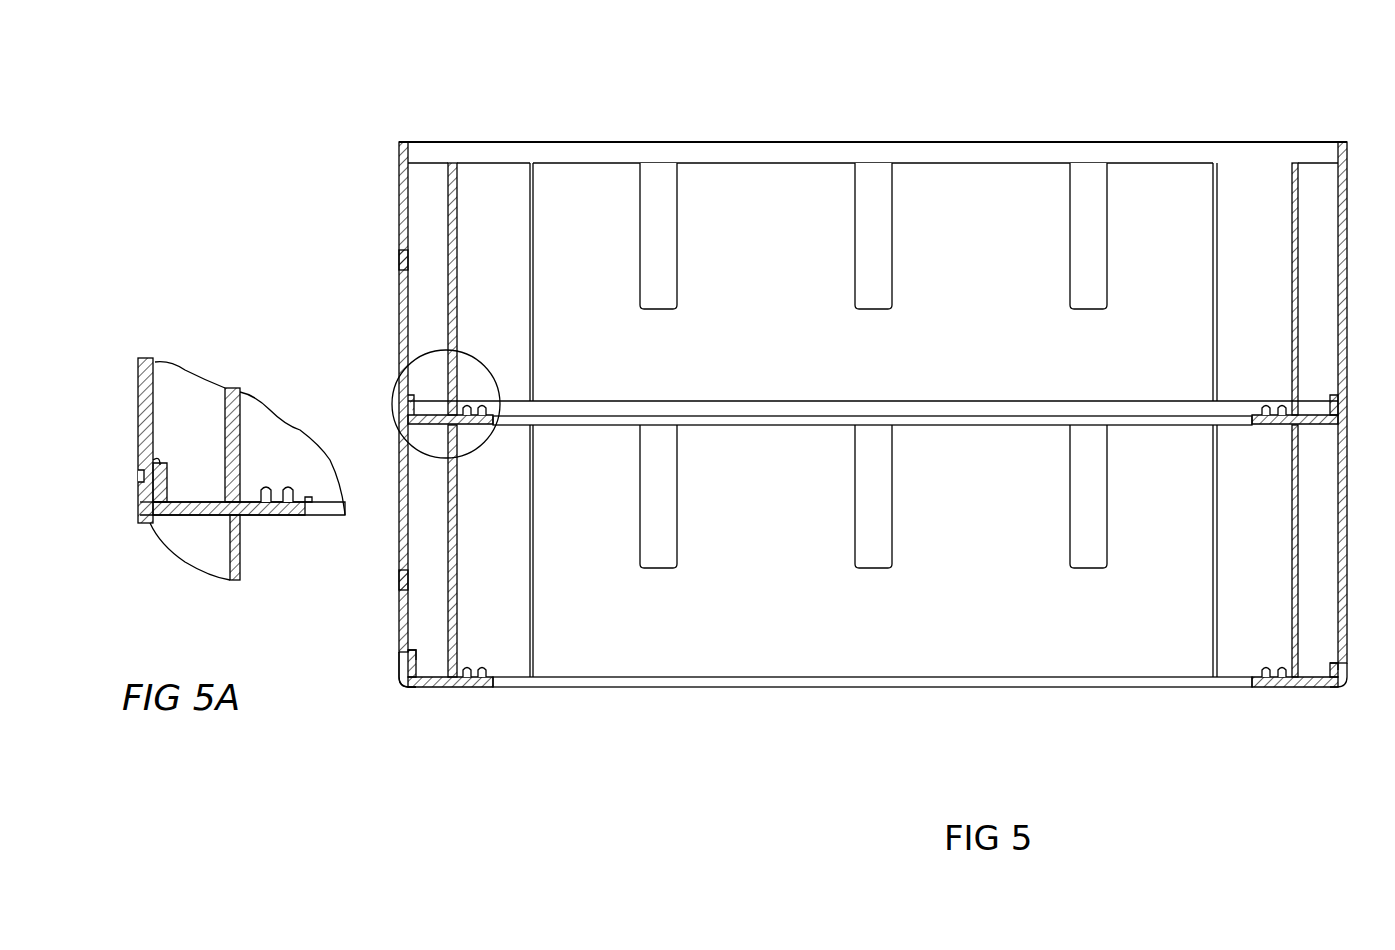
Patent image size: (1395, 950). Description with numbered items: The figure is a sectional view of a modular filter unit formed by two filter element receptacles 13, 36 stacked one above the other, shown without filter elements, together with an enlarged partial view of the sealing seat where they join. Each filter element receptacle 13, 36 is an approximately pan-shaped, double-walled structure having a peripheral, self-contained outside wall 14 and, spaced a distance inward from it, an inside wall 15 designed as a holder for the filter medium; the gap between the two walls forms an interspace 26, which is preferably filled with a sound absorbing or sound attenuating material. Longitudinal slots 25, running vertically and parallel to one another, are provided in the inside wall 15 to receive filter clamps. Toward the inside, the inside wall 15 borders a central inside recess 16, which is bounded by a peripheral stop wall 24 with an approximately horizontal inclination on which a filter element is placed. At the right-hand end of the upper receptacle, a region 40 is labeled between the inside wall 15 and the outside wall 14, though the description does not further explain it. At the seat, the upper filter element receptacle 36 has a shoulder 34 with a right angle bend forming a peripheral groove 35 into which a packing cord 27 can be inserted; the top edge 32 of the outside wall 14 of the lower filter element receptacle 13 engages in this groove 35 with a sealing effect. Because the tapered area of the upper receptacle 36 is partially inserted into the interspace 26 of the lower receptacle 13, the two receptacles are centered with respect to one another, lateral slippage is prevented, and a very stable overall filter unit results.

In FIG. 5, the filter element receptacle 13 is at (398, 582).
In FIG. 5A, the filter element receptacle 13 is at (178, 524).
In FIG. 5, the outside wall 14 is at (400, 185).
In FIG. 5A, the outside wall 14 is at (160, 366).
In FIG. 5, the inside wall 15 is at (1292, 318).
In FIG. 5, the central inside recess 16 is at (870, 416).
In FIG. 5, the stop wall 24 is at (487, 688).
In FIG. 5, the longitudinal slots 25 is at (655, 165).
In FIG. 5, the interspace 26 is at (425, 325).
In FIG. 5A, the packing cord 27 is at (162, 462).
In FIG. 5, the top edge 32 is at (400, 142).
In FIG. 5A, the top edge 32 is at (140, 485).
In FIG. 5, the shoulder 34 is at (406, 658).
In FIG. 5A, the shoulder 34 is at (150, 462).
In FIG. 5, the peripheral groove 35 is at (407, 690).
In FIG. 5, the filter element receptacle 36 is at (398, 262).
In FIG. 5A, the filter element receptacle 36 is at (210, 380).
In FIG. 5, the end compartment 40 is at (1311, 180).